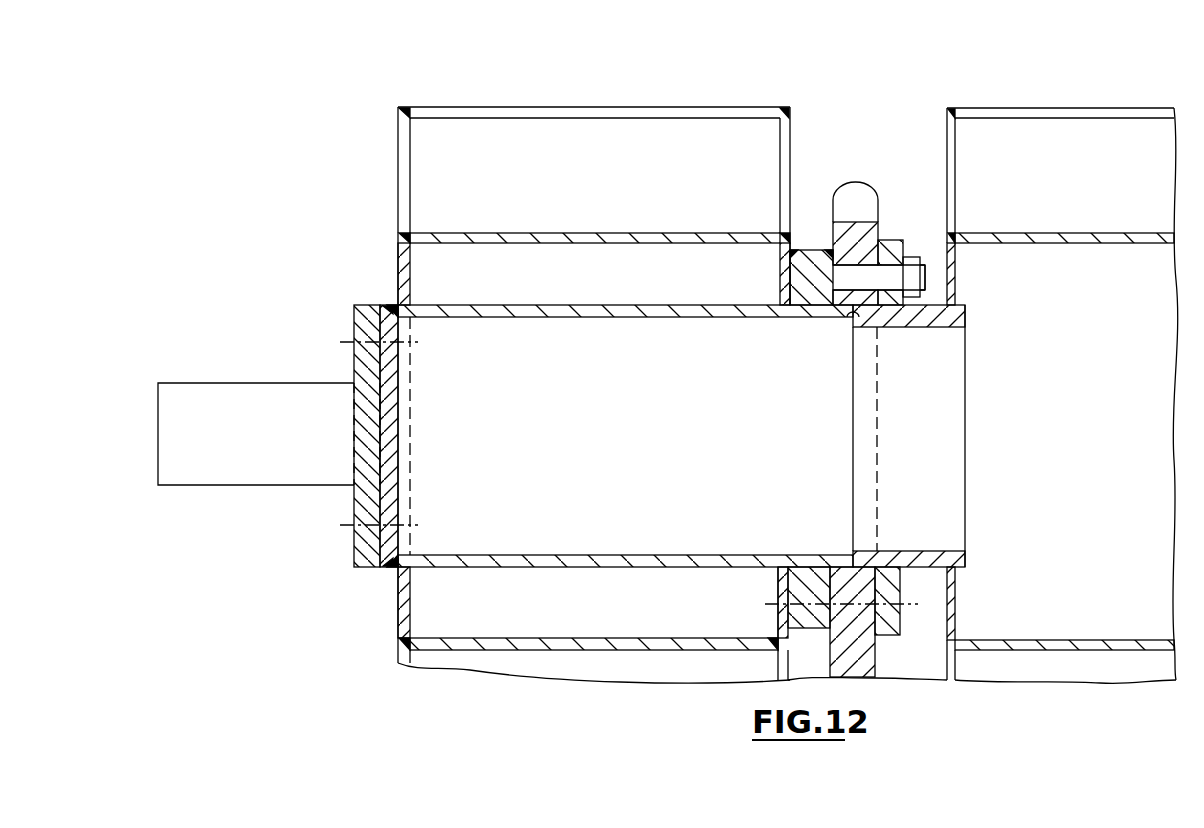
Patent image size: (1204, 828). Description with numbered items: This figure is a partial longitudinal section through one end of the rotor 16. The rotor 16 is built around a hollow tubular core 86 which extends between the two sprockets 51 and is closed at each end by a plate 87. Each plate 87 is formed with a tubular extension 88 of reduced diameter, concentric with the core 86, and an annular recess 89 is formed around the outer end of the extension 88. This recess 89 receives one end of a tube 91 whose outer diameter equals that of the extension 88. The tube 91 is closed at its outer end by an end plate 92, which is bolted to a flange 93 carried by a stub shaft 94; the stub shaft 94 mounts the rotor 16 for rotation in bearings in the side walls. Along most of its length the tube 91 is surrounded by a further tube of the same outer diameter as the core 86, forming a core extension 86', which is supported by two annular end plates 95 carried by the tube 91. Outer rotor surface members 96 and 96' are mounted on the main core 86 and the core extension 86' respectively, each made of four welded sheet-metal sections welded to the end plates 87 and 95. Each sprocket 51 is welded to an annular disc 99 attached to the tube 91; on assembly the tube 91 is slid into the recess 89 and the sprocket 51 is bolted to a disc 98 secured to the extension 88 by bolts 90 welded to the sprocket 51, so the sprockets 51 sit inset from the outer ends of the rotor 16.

The rotor 16 is at (778, 108).
The outer rotor surface member 96' is at (594, 94).
The outer rotor surface member 96 is at (1060, 155).
The core extension 86' is at (594, 413).
The hollow tubular core 86 is at (1064, 421).
The annular end plate 95 is at (404, 276).
The tube 91 is at (646, 318).
The tubular extension 88 is at (957, 311).
The annular recess 89 is at (850, 315).
The plate 87 is at (956, 281).
The annular disc 99 is at (811, 250).
The sprocket 51 is at (870, 203).
The disc 98 is at (898, 242).
The bolt 90 is at (924, 270).
The flange 93 is at (362, 327).
The end plate 92 is at (394, 358).
The stub shaft 94 is at (243, 392).